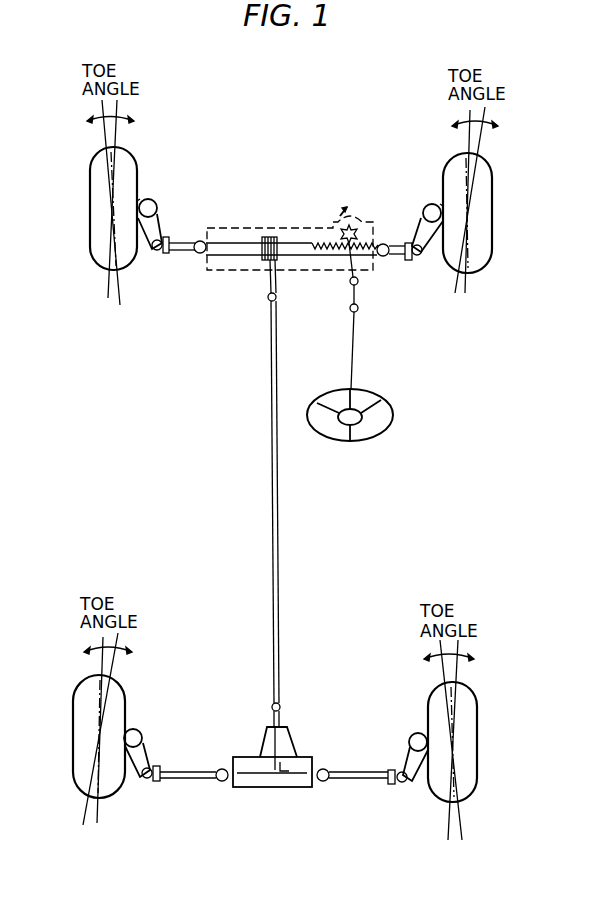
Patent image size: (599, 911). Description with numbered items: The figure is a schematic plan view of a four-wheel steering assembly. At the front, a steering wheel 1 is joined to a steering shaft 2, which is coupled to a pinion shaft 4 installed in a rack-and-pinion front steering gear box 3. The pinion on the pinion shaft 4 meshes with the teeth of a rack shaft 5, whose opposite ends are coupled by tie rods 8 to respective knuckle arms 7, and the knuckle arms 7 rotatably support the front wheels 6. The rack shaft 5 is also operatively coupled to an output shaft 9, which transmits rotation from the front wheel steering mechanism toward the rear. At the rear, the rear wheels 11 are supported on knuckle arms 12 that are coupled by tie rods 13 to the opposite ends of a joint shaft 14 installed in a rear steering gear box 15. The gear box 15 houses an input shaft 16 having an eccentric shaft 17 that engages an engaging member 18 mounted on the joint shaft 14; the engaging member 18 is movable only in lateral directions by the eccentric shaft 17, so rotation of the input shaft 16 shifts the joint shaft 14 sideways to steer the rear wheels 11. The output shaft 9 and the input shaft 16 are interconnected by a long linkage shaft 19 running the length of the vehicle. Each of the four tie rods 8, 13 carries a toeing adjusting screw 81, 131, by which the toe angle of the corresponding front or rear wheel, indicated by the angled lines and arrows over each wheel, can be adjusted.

The steering wheel 1 is at (373, 436).
The steering shaft 2 is at (354, 368).
The rack-and-pinion front steering gear box 3 is at (275, 228).
The pinion shaft 4 is at (353, 258).
The rack shaft 5 is at (300, 250).
The front wheel 6 is at (97, 179).
The knuckle arm 7 is at (150, 230).
The tie rod 8 is at (173, 252).
The toeing adjusting screw 81 is at (168, 238).
The output shaft 9 is at (268, 284).
The rear wheel 11 is at (82, 773).
The knuckle arm 12 is at (145, 750).
The tie rod 13 is at (187, 779).
The toeing adjusting screw 131 is at (155, 782).
The joint shaft 14 is at (231, 787).
The rear steering gear box 15 is at (272, 788).
The input shaft 16 is at (271, 717).
The eccentric shaft 17 is at (283, 758).
The engaging member 18 is at (297, 783).
The linkage shaft 19 is at (272, 528).